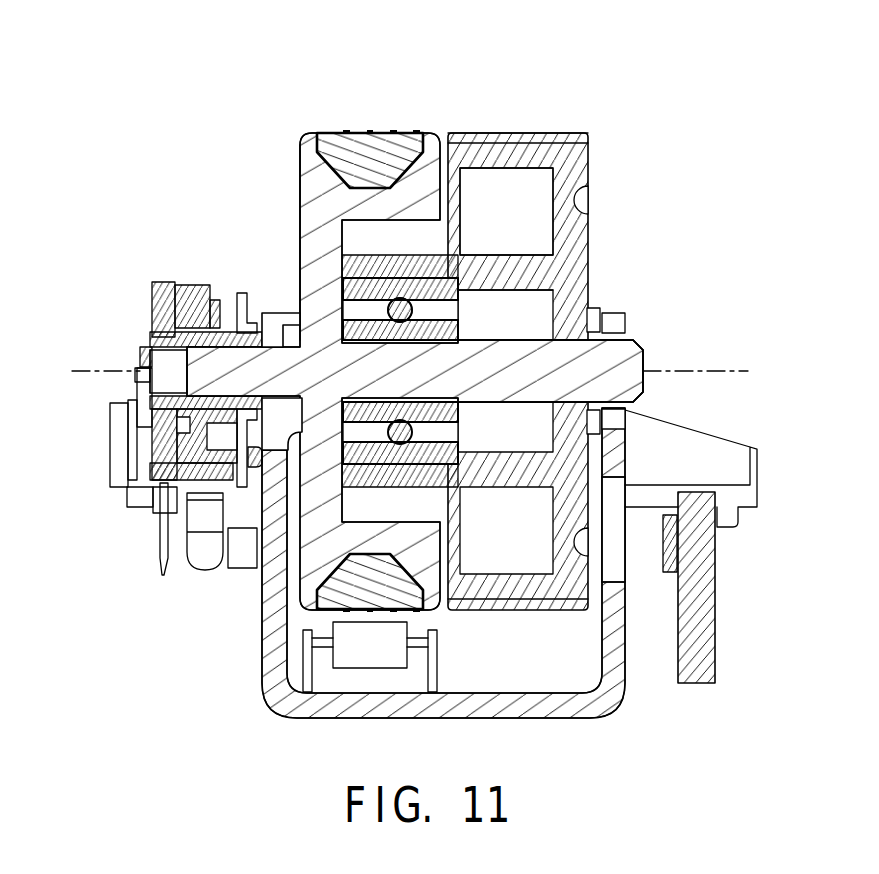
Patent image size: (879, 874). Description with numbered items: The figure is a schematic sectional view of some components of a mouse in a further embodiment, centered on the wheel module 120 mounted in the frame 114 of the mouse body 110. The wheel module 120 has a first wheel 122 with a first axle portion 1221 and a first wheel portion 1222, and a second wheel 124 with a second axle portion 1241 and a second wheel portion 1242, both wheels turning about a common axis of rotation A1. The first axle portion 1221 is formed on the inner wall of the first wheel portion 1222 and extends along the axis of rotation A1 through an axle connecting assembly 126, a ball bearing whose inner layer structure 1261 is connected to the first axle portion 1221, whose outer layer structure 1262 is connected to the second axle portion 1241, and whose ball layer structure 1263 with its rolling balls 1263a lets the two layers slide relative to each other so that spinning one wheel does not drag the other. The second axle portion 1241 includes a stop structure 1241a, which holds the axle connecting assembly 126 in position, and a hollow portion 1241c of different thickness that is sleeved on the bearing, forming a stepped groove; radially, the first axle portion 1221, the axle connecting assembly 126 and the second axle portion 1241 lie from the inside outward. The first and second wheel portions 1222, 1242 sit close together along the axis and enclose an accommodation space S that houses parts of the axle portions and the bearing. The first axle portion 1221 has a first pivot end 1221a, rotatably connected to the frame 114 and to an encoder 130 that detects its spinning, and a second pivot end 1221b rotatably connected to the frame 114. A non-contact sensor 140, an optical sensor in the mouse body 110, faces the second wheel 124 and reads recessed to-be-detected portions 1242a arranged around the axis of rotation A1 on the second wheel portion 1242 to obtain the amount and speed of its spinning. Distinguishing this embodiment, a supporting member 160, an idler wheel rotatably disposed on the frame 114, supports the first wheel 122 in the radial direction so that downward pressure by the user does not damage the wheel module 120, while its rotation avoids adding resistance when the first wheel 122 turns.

The wheel module 120 is at (612, 122).
The first wheel 122 is at (398, 319).
The first axle portion 1221 is at (398, 344).
The first pivot end 1221a is at (203, 383).
The second pivot end 1221b is at (633, 359).
The first wheel portion 1222 is at (330, 140).
The second wheel 124 is at (407, 386).
The second axle portion 1241 is at (261, 203).
The stop structure 1241a is at (468, 290).
The hollow portion 1241c is at (378, 462).
The second wheel portion 1242 is at (546, 338).
The to-be-detected portions 1242a is at (584, 194).
The axle connecting assembly 126 is at (261, 228).
The inner layer structure 1261 is at (370, 330).
The outer layer structure 1262 is at (365, 290).
The ball layer structure 1263 is at (373, 312).
The balls 1263a is at (396, 306).
The encoder 130 is at (200, 315).
The non-contact sensor 140 is at (666, 545).
The supporting member 160 is at (357, 652).
The mouse body 110 is at (545, 563).
The frame 114 is at (614, 575).
The accommodation space S is at (527, 240).
The axis of rotation A1 is at (714, 373).